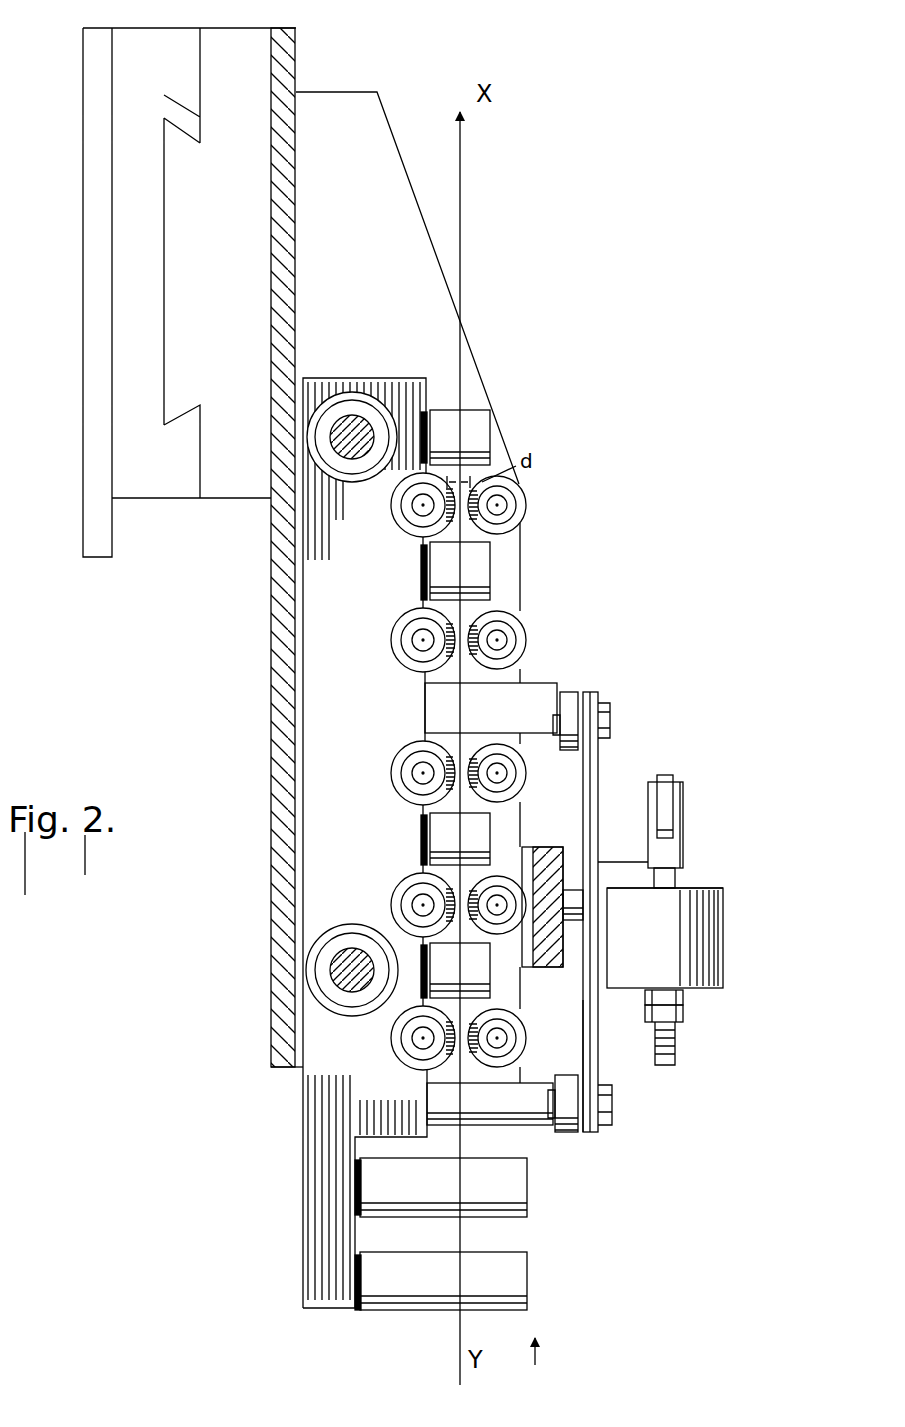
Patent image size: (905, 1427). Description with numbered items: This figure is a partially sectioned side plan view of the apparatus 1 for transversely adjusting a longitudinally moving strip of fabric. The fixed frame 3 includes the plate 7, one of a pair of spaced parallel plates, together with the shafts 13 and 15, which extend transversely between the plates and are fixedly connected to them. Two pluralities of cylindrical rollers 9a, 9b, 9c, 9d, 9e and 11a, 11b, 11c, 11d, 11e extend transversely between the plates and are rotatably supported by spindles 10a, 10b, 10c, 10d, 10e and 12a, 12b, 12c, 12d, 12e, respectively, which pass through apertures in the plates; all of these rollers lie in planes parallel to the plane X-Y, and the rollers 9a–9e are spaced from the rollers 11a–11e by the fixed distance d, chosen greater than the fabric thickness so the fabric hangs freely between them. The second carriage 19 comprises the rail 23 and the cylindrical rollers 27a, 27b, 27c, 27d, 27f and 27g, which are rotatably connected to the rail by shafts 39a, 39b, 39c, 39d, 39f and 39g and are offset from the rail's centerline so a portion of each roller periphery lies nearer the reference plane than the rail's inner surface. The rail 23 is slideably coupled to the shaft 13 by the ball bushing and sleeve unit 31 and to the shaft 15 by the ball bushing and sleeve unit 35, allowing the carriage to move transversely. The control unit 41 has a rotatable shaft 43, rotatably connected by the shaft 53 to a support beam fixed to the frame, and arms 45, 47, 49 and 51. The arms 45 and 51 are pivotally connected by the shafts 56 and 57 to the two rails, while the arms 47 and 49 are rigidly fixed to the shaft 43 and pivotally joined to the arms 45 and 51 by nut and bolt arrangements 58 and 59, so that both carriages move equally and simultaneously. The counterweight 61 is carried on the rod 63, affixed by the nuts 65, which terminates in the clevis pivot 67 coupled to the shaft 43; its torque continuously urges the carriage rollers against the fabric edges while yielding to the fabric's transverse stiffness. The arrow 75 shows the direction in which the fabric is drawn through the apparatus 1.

The apparatus 1 is at (610, 552).
The fixed frame 3 is at (416, 68).
The plate 7 is at (370, 262).
The cylindrical roller 9a is at (518, 1036).
The cylindrical roller 9b is at (500, 935).
The cylindrical roller 9c is at (524, 772).
The cylindrical roller 9d is at (522, 630).
The cylindrical roller 9e is at (522, 504).
The spindle 10a is at (505, 1040).
The spindle 10b is at (500, 896).
The spindle 10c is at (505, 779).
The spindle 10d is at (505, 645).
The spindle 10e is at (504, 511).
The cylindrical roller 11a is at (412, 1040).
The cylindrical roller 11b is at (412, 905).
The cylindrical roller 11c is at (410, 770).
The cylindrical roller 11d is at (410, 656).
The cylindrical roller 11e is at (412, 522).
The spindle 12a is at (407, 1066).
The spindle 12b is at (423, 900).
The spindle 12c is at (423, 766).
The spindle 12d is at (413, 638).
The spindle 12e is at (413, 504).
The shaft 13 is at (353, 430).
The shaft 15 is at (338, 968).
The second carriage 19 is at (262, 672).
The rail 23 is at (402, 392).
The cylindrical roller 27a is at (520, 1280).
The cylindrical roller 27b is at (530, 1204).
The cylindrical roller 27c is at (482, 996).
The cylindrical roller 27d is at (482, 822).
The cylindrical roller 27f is at (482, 568).
The cylindrical roller 27g is at (480, 430).
The ball bushing and sleeve unit 31 is at (336, 432).
The ball bushing and sleeve unit 35 is at (342, 1002).
The shaft 39a is at (355, 1270).
The shaft 39b is at (355, 1180).
The shaft 39c is at (427, 978).
The shaft 39d is at (421, 832).
The shaft 39f is at (421, 572).
The shaft 39g is at (432, 412).
The control unit 41 is at (737, 896).
The rotatable shaft 43 is at (627, 870).
The arm 45 is at (570, 1136).
The arm 47 is at (598, 1040).
The arm 49 is at (598, 766).
The arm 51 is at (570, 698).
The shaft 53 is at (576, 894).
The shaft 56 is at (530, 1128).
The shaft 57 is at (540, 692).
The nut and bolt arrangement 58 is at (612, 1114).
The nut and bolt arrangement 59 is at (612, 720).
The counterweight 61 is at (725, 968).
The rod 63 is at (672, 880).
The nuts 65 is at (685, 1000).
The clevis pivot 67 is at (676, 802).
The arrow 75 is at (554, 1355).